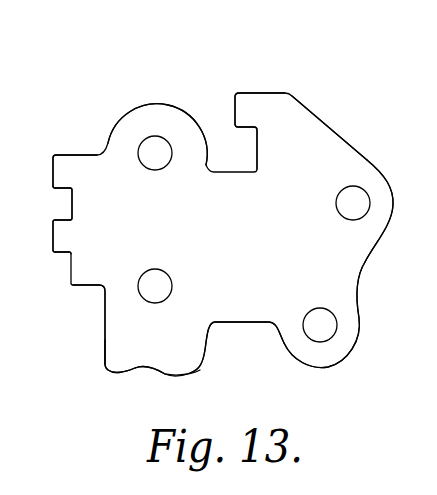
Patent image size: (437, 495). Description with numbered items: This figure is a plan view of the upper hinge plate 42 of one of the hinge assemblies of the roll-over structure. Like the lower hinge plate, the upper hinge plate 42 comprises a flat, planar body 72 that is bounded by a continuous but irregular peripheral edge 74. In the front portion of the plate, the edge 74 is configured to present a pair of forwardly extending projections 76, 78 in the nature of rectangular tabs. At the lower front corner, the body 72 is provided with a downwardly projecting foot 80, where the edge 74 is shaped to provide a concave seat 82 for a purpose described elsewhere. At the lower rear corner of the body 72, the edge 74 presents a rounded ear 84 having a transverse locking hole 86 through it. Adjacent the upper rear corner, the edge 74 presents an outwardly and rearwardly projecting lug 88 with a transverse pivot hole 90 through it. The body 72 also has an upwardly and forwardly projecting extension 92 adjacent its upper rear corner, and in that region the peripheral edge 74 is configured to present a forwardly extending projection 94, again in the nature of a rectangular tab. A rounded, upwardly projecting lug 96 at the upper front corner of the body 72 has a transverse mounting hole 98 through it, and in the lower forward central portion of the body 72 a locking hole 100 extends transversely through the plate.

The upper hinge plate 42 is at (113, 97).
The body 72 is at (232, 308).
The peripheral edge 74 is at (101, 328).
The projection 76 is at (53, 240).
The projection 78 is at (53, 165).
The foot 80 is at (120, 358).
The concave seat 82 is at (157, 373).
The ear 84 is at (337, 355).
The locking hole 86 is at (313, 317).
The lug 88 is at (363, 167).
The pivot hole 90 is at (358, 203).
The extension 92 is at (310, 125).
The projection 94 is at (240, 106).
The lug 96 is at (152, 115).
The mounting hole 98 is at (158, 163).
The locking hole 100 is at (155, 278).